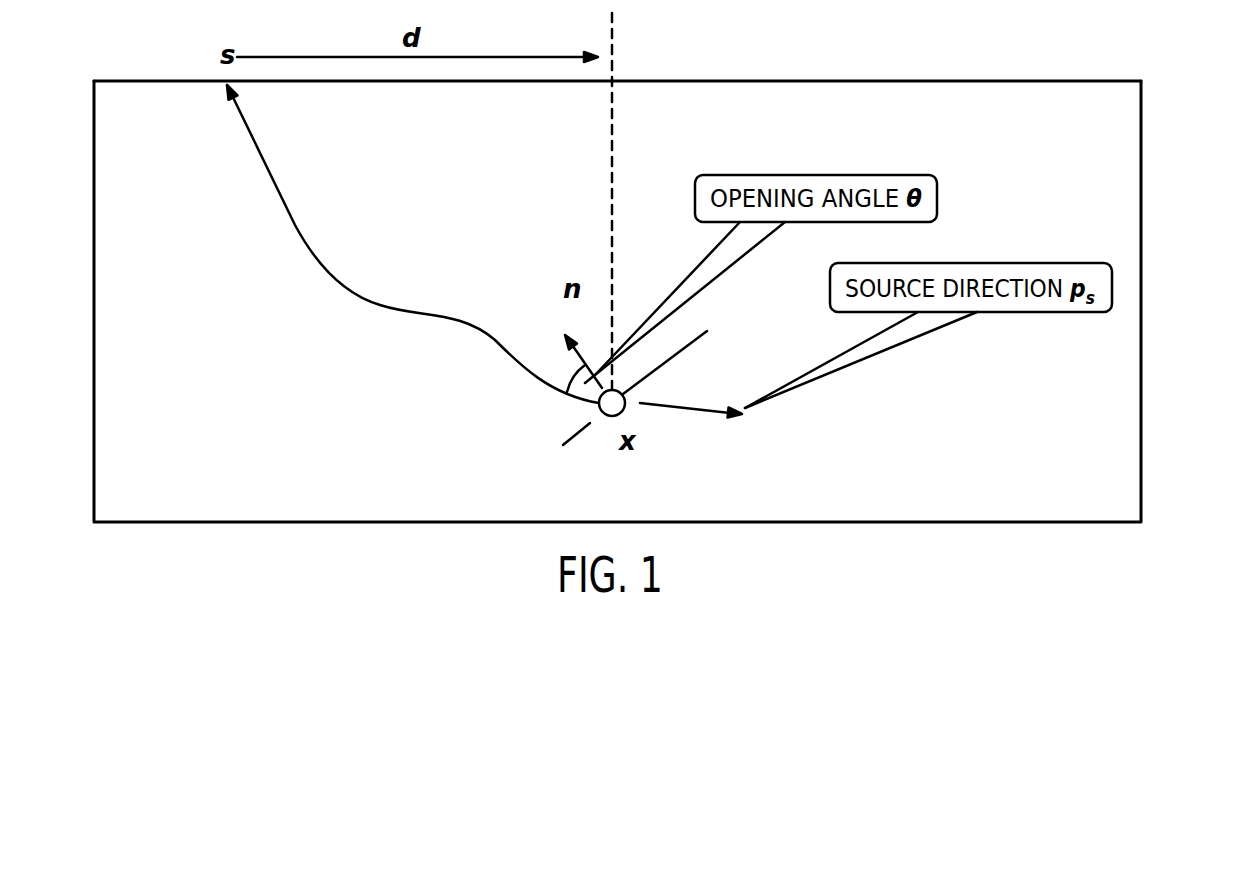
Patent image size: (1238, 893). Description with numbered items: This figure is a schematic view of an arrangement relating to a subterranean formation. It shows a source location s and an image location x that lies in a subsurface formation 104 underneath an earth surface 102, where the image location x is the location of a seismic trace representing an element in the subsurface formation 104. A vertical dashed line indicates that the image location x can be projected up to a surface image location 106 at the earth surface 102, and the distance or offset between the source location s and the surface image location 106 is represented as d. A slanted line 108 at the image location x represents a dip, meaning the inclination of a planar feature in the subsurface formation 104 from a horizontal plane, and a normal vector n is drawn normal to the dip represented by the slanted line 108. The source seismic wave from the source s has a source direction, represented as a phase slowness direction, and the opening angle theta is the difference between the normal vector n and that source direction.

The earth surface 102 is at (880, 81).
The subsurface formation 104 is at (1150, 81).
The surface image location 106 is at (612, 81).
The slanted line 108 is at (575, 432).